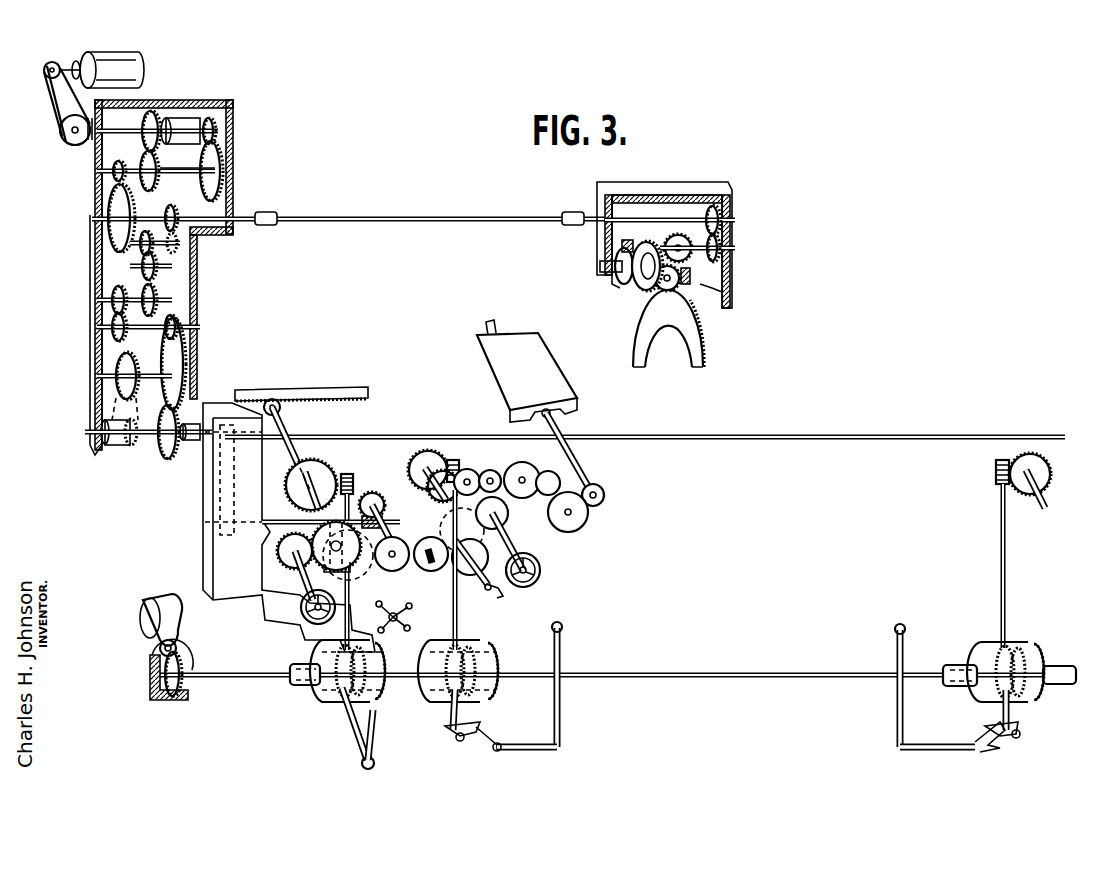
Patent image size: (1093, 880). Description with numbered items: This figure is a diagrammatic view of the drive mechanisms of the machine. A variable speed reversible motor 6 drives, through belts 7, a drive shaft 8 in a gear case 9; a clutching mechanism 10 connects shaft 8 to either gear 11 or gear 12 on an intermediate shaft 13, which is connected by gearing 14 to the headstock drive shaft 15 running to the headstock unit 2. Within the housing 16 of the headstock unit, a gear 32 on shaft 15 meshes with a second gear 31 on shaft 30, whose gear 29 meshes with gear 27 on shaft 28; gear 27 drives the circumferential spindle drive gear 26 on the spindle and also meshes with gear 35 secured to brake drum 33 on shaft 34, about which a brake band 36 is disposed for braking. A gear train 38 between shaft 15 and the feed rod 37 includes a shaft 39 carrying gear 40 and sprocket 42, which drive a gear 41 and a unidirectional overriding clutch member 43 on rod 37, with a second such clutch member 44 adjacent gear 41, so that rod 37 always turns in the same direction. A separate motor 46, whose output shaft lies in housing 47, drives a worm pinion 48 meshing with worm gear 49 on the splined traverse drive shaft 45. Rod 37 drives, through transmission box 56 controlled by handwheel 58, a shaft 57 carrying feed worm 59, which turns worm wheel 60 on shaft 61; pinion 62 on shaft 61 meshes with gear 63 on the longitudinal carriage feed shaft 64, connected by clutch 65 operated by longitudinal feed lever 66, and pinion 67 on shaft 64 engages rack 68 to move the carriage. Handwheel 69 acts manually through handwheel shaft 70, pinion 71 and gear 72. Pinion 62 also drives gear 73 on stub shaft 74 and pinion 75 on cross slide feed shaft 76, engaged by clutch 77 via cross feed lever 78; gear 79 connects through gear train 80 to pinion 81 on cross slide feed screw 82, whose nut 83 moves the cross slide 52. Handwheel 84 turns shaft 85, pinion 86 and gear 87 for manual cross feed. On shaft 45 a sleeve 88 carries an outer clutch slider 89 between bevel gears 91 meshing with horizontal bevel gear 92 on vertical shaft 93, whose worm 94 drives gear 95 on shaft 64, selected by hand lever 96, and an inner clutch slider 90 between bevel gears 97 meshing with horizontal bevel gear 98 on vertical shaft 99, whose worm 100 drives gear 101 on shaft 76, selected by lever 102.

The headstock unit 2 is at (735, 282).
The variable speed reversible motor 6 is at (140, 58).
The belts 7 is at (50, 96).
The drive shaft 8 is at (132, 128).
The gear case 9 is at (97, 188).
The clutching mechanism 10 is at (186, 118).
The gear 11 is at (158, 166).
The gear 12 is at (226, 160).
The intermediate shaft 13 is at (182, 172).
The gearing 14 is at (110, 232).
The headstock drive shaft 15 is at (358, 215).
The housing 16 is at (732, 204).
The spindle drive gear 26 is at (708, 340).
The gear 27 is at (688, 286).
The shaft 28 is at (680, 278).
The gear 29 is at (672, 236).
The shaft 30 is at (698, 246).
The second gear 31 is at (718, 240).
The gear 32 is at (714, 205).
The brake drum 33 is at (614, 282).
The shaft 34 is at (600, 267).
The gear 35 is at (646, 290).
The brake band 36 is at (624, 286).
The feed rod 37 is at (395, 433).
The gear train 38 is at (92, 312).
The shaft 39 is at (116, 376).
The gear 40 is at (184, 352).
The gear 41 is at (160, 458).
The sprocket 42 is at (116, 402).
The unidirectional overriding clutch member 43 is at (110, 446).
The collar 44 is at (190, 442).
The traverse drive shaft 45 is at (232, 678).
The motor 46 is at (142, 612).
The housing 47 is at (148, 686).
The worm pinion 48 is at (176, 644).
The worm gear 49 is at (170, 696).
The cross slide 52 is at (478, 342).
The transmission box 56 is at (212, 505).
The shaft 57 is at (262, 518).
The handwheel 58 is at (410, 606).
The feed worm 59 is at (384, 512).
The worm wheel 60 is at (373, 494).
The shaft 61 is at (384, 522).
The pinion 62 is at (398, 568).
The gear 63 is at (362, 568).
The longitudinal carriage feed shaft 64 is at (300, 460).
The clutch 65 is at (340, 549).
The longitudinal feed lever 66 is at (348, 574).
The pinion 67 is at (280, 406).
The rack 68 is at (338, 402).
The handwheel 69 is at (300, 608).
The handwheel shaft 70 is at (300, 578).
The pinion 71 is at (278, 550).
The gear 72 is at (312, 521).
The gear 73 is at (436, 566).
The stub shaft 74 is at (470, 568).
The pinion 75 is at (480, 556).
The cross slide feed shaft 76 is at (424, 478).
The clutch 77 is at (462, 530).
The cross feed lever 78 is at (500, 598).
The gear 79 is at (444, 472).
The gear train 80 is at (584, 522).
The pinion 81 is at (604, 492).
The cross slide feed screw 82 is at (582, 468).
The cross slide nut 83 is at (550, 415).
The handwheel 84 is at (541, 570).
The shaft 85 is at (515, 548).
The pinion 86 is at (508, 514).
The gear 87 is at (490, 470).
The sleeve 88 is at (300, 686).
The outer clutch slider 89 is at (338, 700).
The inner clutch slider 90 is at (450, 706).
The bevel gears 91 is at (306, 656).
The horizontal bevel gear 92 is at (322, 640).
The vertically extending shaft 93 is at (350, 616).
The worm 94 is at (348, 474).
The gear 95 is at (320, 468).
The hand lever 96 is at (378, 730).
The bevel gears 97 is at (388, 684).
The horizontal bevel gear 98 is at (470, 646).
The vertically extending shaft 99 is at (458, 606).
The worm 100 is at (455, 460).
The gear 101 is at (430, 452).
The lever 102 is at (560, 700).